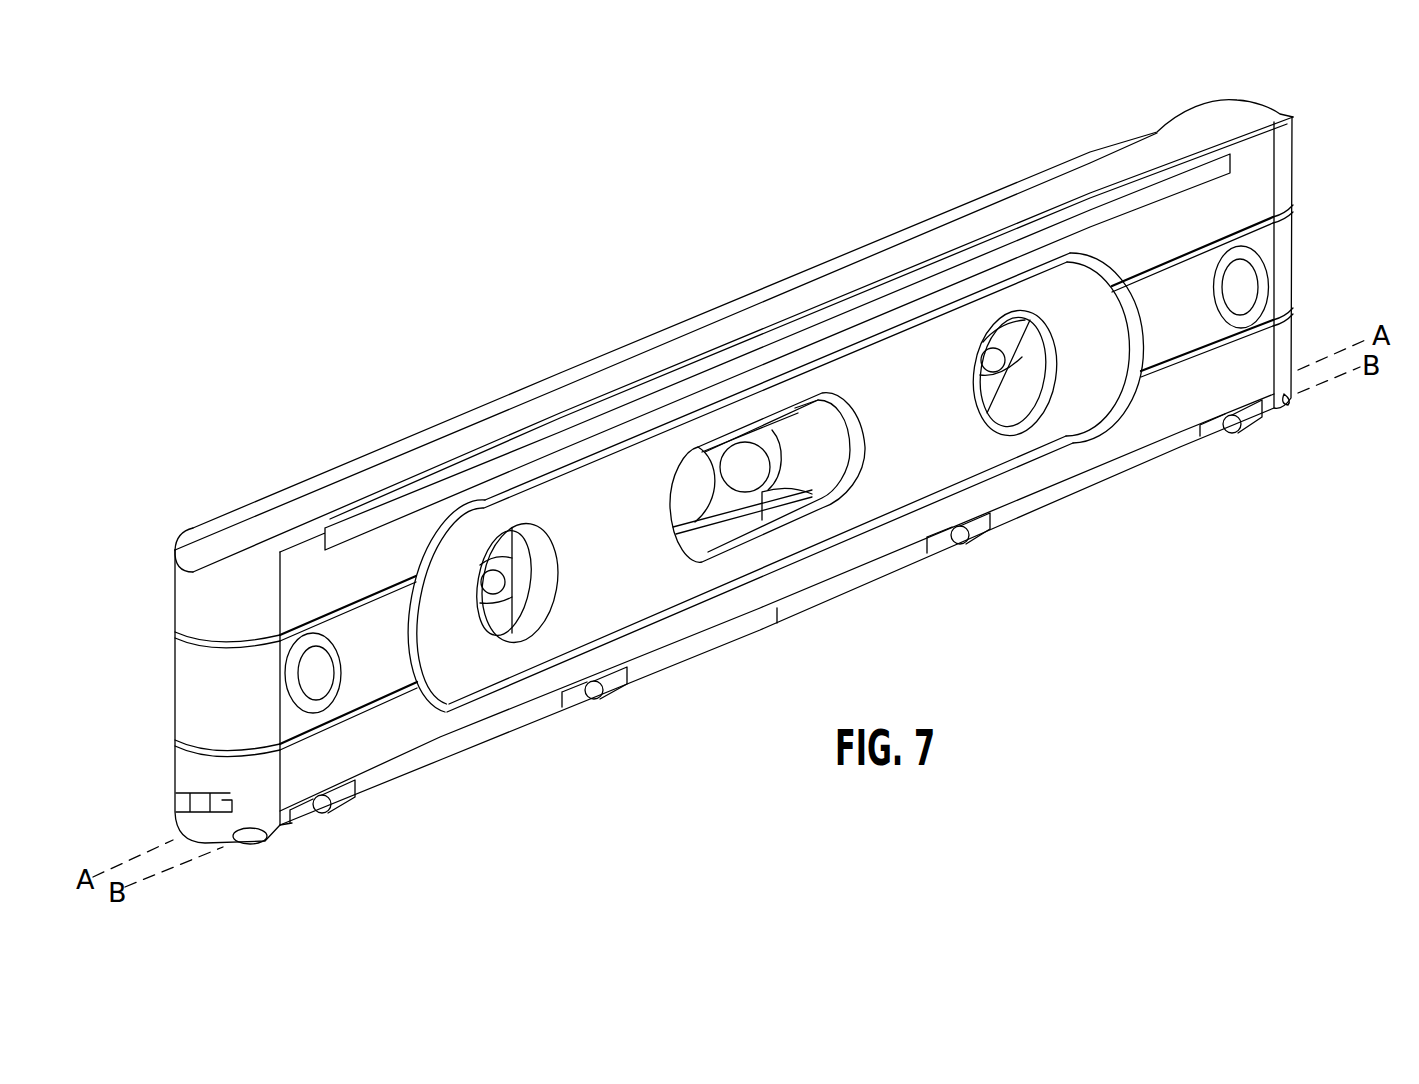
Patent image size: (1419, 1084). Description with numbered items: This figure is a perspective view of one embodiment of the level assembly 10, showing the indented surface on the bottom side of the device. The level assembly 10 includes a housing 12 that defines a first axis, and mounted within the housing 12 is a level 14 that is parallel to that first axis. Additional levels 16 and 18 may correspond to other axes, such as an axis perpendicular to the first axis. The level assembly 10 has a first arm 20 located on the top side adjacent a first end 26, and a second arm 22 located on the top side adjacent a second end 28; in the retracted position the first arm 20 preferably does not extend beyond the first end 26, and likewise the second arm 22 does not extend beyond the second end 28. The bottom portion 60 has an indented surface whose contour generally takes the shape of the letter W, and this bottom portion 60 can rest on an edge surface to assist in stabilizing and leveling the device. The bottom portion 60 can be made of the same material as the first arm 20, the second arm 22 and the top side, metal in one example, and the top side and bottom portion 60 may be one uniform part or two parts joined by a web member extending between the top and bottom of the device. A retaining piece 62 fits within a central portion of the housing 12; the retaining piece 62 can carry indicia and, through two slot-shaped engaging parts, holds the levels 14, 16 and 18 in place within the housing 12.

The level assembly 10 is at (632, 282).
The housing 12 is at (352, 757).
The level 14 is at (773, 432).
The additional level 16 is at (523, 532).
The additional level 18 is at (1010, 335).
The first arm 20 is at (453, 761).
The second arm 22 is at (1073, 500).
The first end 26 is at (172, 700).
The second end 28 is at (1297, 258).
The bottom portion 60 is at (357, 457).
The retaining piece 62 is at (910, 367).